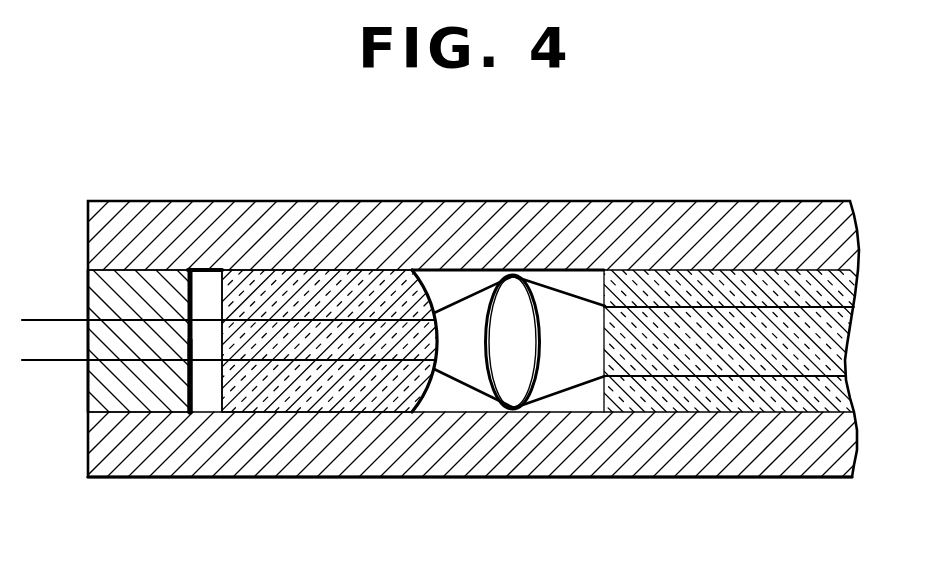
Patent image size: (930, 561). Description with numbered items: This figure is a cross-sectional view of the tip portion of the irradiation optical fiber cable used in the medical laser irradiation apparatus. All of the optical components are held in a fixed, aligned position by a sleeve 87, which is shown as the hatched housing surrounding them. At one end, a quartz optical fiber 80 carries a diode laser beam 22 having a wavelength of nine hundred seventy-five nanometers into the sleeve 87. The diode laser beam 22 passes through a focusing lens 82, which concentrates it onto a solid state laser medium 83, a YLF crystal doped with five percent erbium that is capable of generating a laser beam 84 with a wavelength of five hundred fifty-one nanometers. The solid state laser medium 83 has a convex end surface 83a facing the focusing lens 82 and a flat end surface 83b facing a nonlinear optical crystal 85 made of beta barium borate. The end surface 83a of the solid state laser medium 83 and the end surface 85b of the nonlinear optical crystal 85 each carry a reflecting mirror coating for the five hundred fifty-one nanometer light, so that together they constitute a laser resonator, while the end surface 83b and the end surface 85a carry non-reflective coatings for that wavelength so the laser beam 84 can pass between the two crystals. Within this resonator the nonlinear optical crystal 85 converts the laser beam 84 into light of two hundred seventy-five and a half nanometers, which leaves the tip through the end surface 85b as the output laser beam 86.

The diode laser beam 22 is at (567, 314).
The quartz optical fiber 80 is at (718, 398).
The focusing lens 82 is at (502, 383).
The solid state laser medium 83 is at (338, 390).
The end surface of the solid state laser medium 83a is at (432, 268).
The end surface of the solid state laser medium 83b is at (221, 297).
The laser beam 84 is at (203, 308).
The nonlinear optical crystal 85 is at (140, 397).
The end surface of the nonlinear optical crystal 85a is at (193, 385).
The end surface of the nonlinear optical crystal 85b is at (88, 390).
The output laser beam 86 is at (53, 328).
The sleeve 87 is at (300, 199).